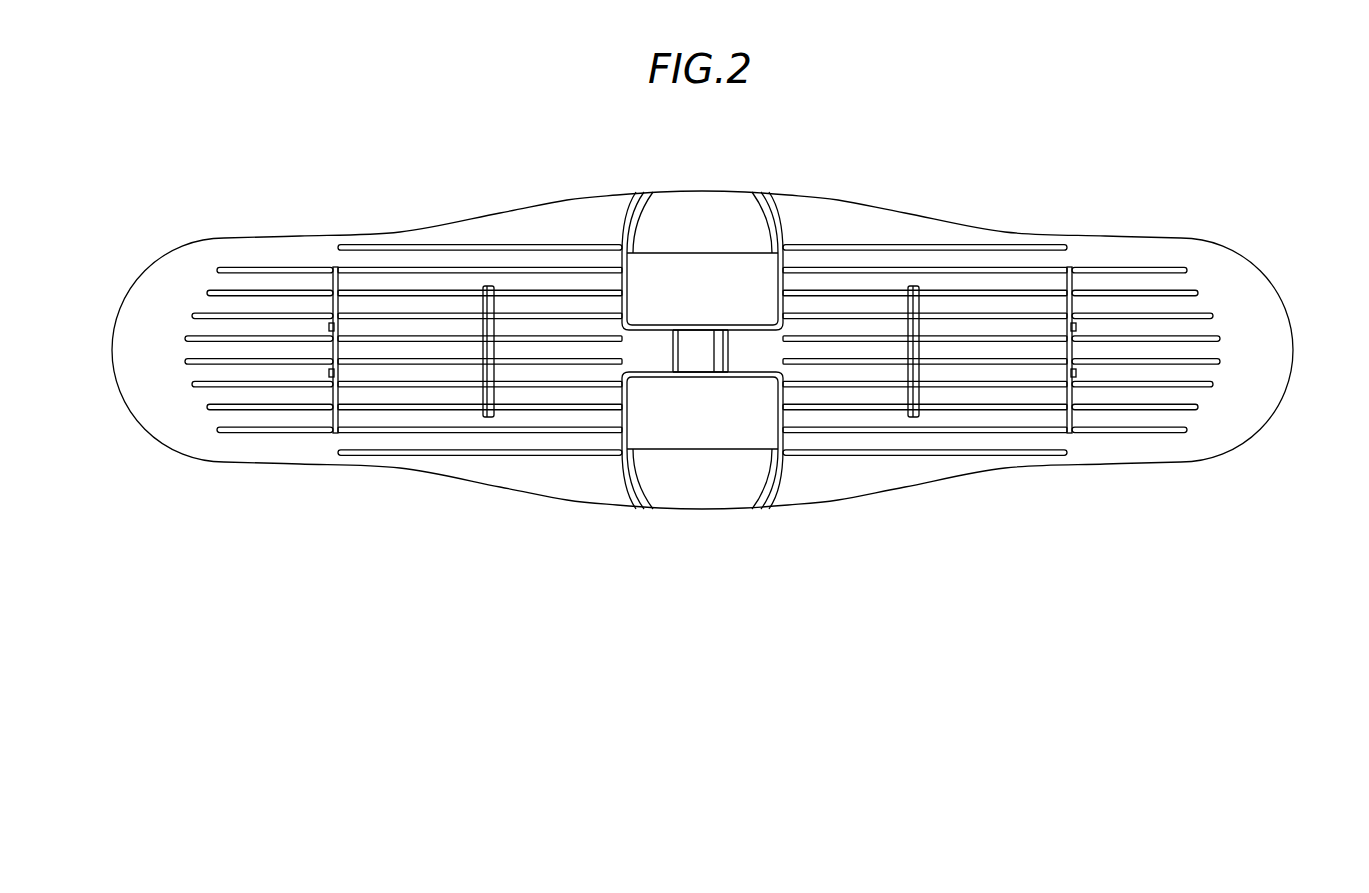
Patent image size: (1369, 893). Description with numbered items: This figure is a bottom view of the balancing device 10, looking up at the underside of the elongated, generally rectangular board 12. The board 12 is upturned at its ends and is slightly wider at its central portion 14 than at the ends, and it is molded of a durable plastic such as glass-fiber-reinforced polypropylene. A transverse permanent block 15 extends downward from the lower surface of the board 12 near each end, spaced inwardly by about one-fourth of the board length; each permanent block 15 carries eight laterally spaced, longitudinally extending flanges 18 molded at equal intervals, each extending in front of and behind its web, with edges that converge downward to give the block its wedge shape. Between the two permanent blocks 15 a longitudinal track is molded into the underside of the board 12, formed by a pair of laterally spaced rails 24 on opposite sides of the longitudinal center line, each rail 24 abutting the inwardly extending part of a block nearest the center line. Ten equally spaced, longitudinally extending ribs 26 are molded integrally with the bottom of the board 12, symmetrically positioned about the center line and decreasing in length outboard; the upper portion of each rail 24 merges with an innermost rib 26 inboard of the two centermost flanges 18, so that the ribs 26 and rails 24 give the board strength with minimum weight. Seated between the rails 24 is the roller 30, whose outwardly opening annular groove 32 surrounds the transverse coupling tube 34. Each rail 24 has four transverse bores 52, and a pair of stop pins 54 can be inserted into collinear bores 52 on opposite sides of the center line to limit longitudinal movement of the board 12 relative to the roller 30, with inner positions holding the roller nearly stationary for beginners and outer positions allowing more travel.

The balancing device 10 is at (716, 323).
The board 12 is at (259, 238).
The central portion 14 is at (641, 191).
The permanent block 15 is at (310, 256).
The flange 18 is at (325, 341).
The rail 24 is at (448, 341).
The rib 26 is at (200, 312).
The roller 30 is at (620, 472).
The annular groove 32 is at (650, 352).
The coupling tube 34 is at (730, 352).
The bore 52 is at (505, 340).
The stop pin 54 is at (489, 286).